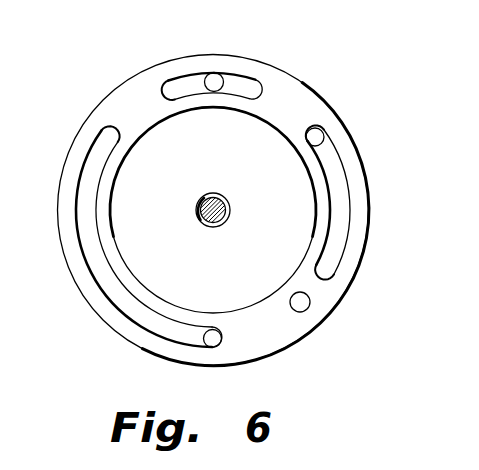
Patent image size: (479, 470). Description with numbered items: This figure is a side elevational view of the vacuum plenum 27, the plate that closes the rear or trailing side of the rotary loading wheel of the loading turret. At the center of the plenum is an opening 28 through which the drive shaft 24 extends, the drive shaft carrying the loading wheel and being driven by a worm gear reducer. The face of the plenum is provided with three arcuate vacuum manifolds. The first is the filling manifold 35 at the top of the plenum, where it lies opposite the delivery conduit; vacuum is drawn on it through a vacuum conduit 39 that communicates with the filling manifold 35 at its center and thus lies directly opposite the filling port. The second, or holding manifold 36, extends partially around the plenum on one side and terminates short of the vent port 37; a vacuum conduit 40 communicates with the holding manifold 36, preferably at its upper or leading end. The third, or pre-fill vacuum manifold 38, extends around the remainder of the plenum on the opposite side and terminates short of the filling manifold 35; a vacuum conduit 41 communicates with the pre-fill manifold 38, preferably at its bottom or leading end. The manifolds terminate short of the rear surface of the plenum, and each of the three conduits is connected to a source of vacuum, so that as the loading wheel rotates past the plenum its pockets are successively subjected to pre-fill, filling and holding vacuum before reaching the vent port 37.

The drive shaft 24 is at (218, 197).
The vacuum plenum 27 is at (323, 100).
The opening 28 is at (213, 225).
The filling manifold 35 is at (250, 84).
The holding manifold 36 is at (340, 198).
The vent port 37 is at (308, 306).
The pre-fill vacuum manifold 38 is at (83, 248).
The vacuum conduit 39 is at (215, 74).
The vacuum conduit 40 is at (318, 137).
The vacuum conduit 41 is at (210, 342).